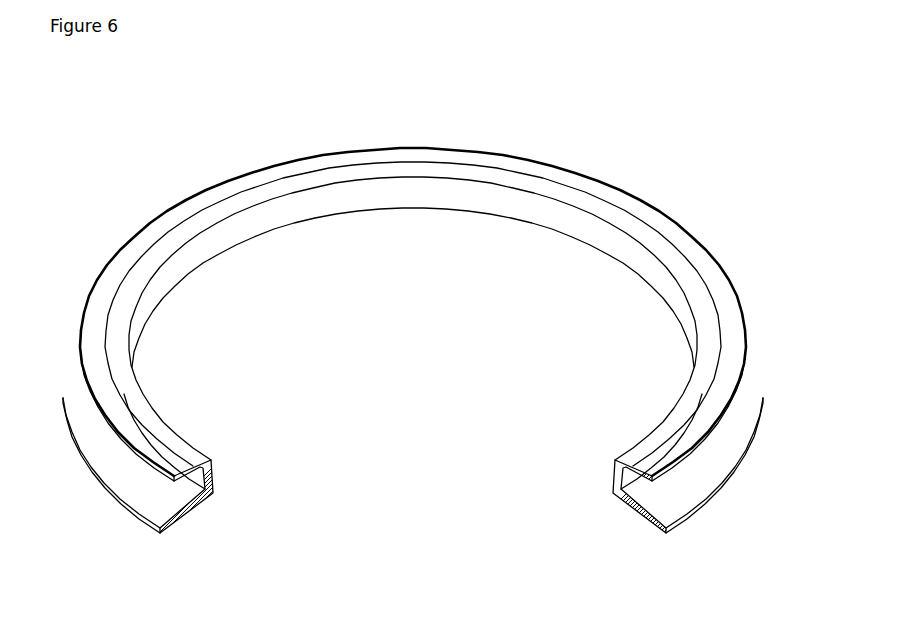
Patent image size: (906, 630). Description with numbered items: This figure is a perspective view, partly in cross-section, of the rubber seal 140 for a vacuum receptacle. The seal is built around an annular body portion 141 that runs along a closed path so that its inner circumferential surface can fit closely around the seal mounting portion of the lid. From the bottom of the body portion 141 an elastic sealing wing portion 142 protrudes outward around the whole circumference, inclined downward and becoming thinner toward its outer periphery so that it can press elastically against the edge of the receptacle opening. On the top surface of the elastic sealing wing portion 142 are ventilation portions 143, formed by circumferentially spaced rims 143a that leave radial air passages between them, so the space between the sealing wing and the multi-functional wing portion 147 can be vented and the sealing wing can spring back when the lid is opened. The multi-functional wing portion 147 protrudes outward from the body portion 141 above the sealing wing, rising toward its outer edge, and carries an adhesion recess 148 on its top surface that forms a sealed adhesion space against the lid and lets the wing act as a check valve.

The rubber seal 140 is at (703, 156).
The body portion 141 is at (214, 472).
The elastic sealing wing portion 142 is at (195, 514).
The ventilation portion 143 is at (767, 386).
The rim 143a is at (131, 490).
The multi-functional wing portion 147 is at (683, 234).
The adhesion recess 148 is at (616, 490).